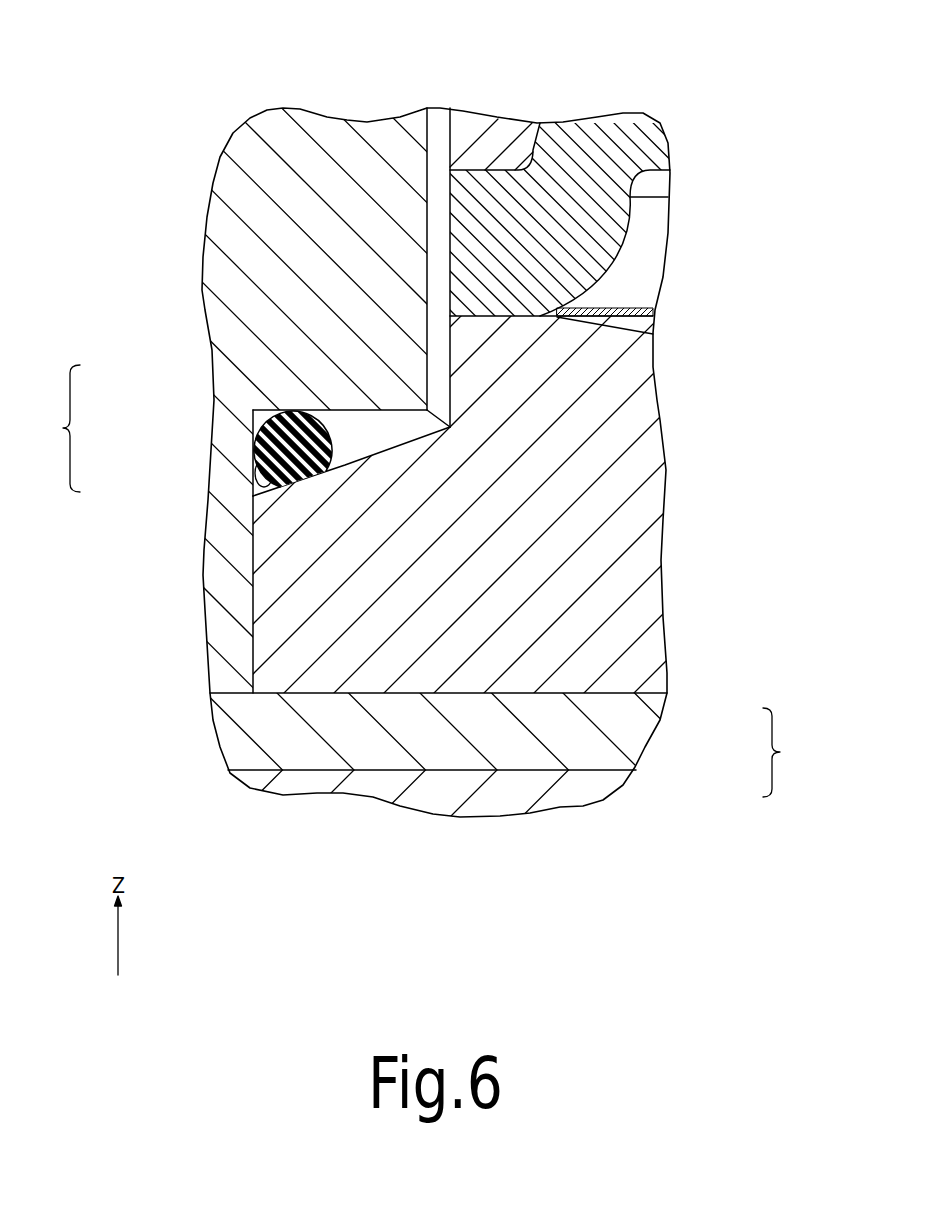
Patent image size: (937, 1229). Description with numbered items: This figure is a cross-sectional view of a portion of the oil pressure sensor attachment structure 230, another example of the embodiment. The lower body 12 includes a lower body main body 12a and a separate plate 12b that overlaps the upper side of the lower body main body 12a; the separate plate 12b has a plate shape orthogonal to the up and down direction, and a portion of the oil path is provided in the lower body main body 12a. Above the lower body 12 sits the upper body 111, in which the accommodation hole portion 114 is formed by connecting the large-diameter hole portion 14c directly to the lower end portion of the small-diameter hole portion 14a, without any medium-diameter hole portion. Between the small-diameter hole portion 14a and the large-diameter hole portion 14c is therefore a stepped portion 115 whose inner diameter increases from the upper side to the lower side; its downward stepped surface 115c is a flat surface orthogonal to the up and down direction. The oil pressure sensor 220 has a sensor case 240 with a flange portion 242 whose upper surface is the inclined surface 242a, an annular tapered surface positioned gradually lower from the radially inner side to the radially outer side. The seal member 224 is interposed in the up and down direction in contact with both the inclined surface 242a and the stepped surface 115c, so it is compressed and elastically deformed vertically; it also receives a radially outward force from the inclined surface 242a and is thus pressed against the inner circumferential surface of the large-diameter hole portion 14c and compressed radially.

The upper body 111 is at (362, 168).
The oil pressure sensor attachment structure 230 is at (455, 86).
The oil pressure sensor 220 is at (700, 251).
The sensor case 240 is at (664, 409).
The accommodation hole portion 114 is at (49, 428).
The small-diameter hole portion 14a is at (427, 290).
The large-diameter hole portion 14c is at (255, 463).
The seal member 224 is at (290, 483).
The lower body 12 is at (789, 752).
The lower body main body 12a is at (583, 787).
The separate plate 12b is at (617, 722).
The flange portion 242 is at (320, 637).
The inclined surface 242a is at (352, 463).
The stepped surface 115c is at (400, 413).
The stepped portion 115 is at (433, 418).